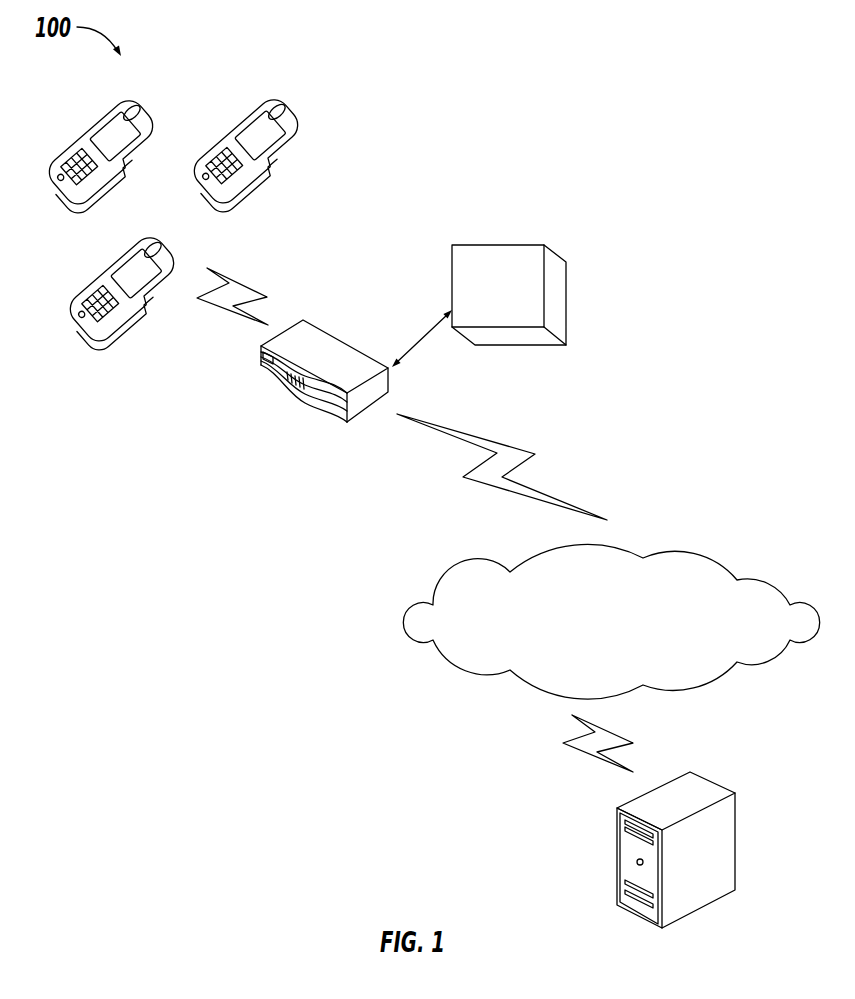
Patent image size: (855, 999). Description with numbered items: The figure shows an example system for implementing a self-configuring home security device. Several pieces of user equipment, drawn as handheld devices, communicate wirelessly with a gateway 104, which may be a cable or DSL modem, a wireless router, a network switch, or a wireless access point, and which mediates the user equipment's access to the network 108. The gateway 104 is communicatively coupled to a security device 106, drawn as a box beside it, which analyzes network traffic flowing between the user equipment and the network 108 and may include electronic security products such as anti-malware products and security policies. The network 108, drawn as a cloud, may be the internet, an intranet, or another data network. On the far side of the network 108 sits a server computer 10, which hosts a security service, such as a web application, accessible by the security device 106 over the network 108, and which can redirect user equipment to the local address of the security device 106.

The gateway 104 is at (302, 407).
The security device 106 is at (480, 297).
The network 108 is at (590, 634).
The server computer 10 is at (737, 840).